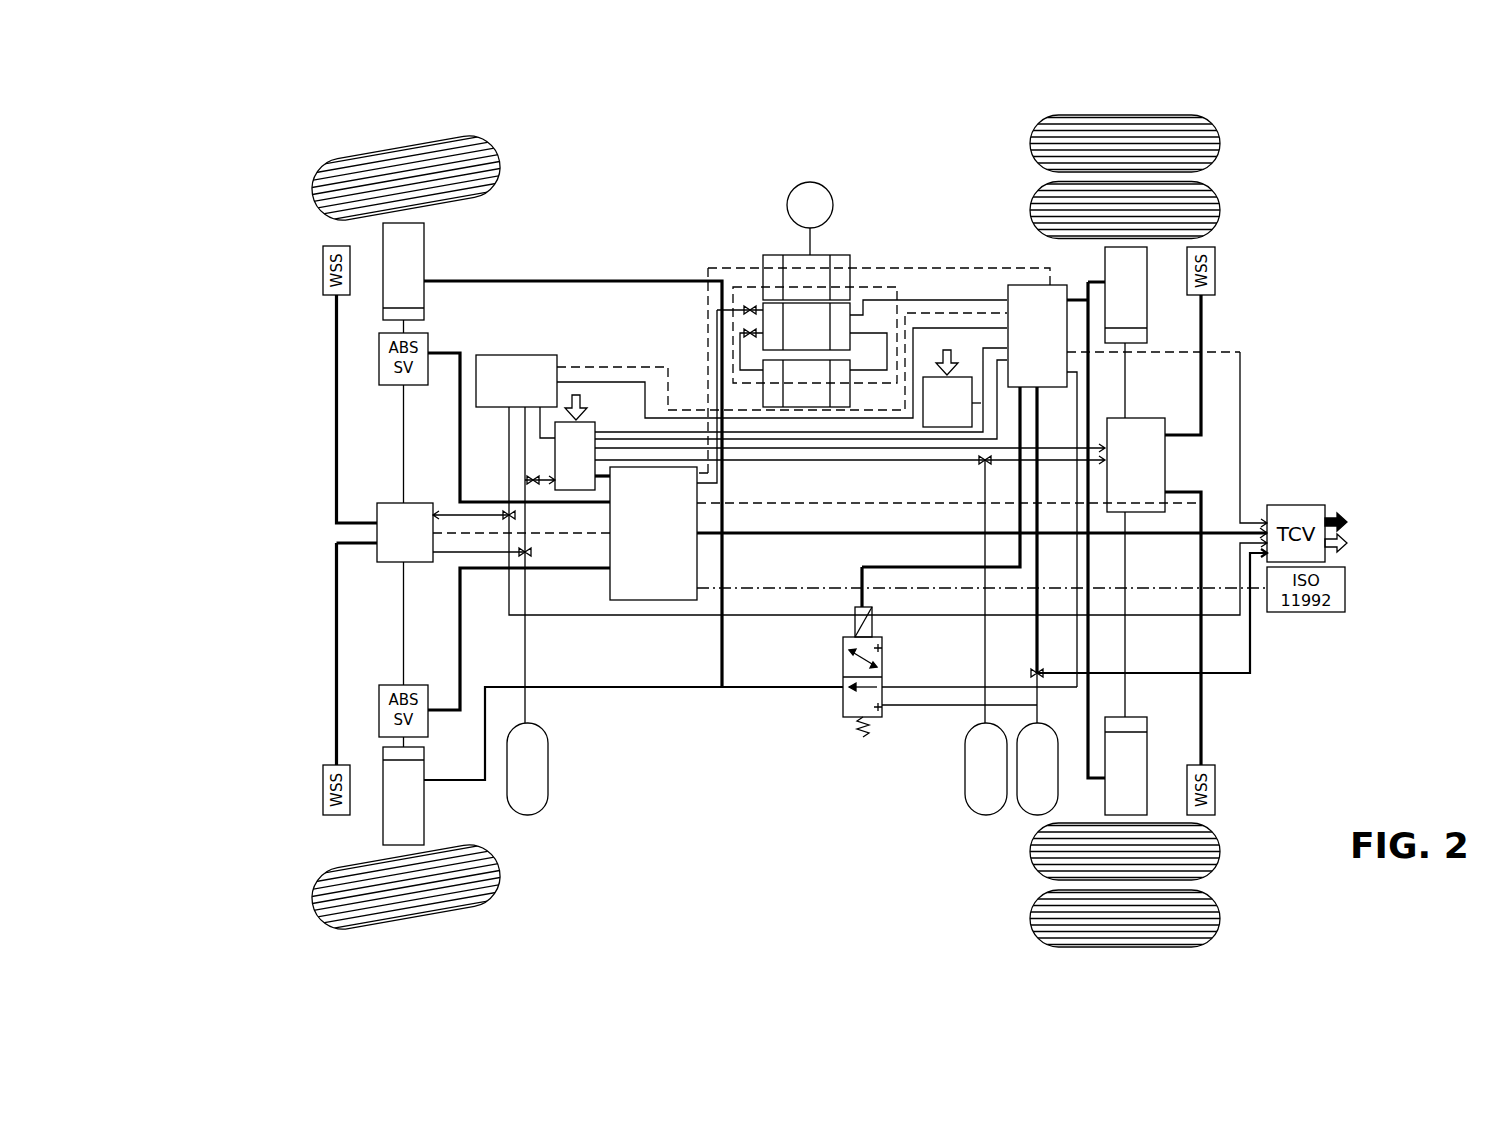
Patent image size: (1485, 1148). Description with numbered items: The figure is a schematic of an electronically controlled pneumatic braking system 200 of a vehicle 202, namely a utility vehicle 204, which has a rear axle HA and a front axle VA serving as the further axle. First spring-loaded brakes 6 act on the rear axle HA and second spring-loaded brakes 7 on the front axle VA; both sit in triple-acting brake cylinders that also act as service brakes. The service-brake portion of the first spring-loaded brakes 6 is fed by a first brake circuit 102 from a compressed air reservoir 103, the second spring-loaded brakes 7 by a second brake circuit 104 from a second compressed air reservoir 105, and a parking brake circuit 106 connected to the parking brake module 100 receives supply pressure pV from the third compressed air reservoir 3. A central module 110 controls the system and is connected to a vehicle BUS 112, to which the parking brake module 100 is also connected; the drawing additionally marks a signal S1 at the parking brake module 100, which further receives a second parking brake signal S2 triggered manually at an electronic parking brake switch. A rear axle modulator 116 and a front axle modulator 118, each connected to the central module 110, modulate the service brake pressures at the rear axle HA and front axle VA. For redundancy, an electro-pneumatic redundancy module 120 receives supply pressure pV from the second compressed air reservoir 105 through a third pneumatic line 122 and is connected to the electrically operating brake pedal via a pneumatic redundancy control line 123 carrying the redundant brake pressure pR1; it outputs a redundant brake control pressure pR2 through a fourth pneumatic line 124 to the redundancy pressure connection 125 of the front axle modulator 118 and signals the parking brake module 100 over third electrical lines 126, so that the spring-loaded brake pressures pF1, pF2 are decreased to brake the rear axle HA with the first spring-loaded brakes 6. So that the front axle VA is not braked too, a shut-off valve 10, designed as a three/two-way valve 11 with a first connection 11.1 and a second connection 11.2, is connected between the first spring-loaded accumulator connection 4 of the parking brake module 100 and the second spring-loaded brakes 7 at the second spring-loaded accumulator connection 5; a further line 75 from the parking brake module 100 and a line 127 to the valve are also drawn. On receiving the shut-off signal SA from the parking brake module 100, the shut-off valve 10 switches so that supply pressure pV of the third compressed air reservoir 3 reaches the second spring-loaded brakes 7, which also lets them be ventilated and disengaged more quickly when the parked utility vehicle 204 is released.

The electronically controlled pneumatic braking system 200 is at (171, 122).
The vehicle 202 is at (171, 122).
The utility vehicle 204 is at (222, 180).
The front axle VA is at (476, 124).
The rear axle HA is at (1238, 130).
The second spring-loaded brakes 7 is at (424, 243).
The first spring-loaded brakes 6 is at (1147, 272).
The vehicle BUS 112 is at (773, 255).
The sensor signal S1 is at (897, 268).
The second parking brake signal S2 is at (983, 346).
The shut-off signal SA is at (920, 565).
The parking brake module 100 is at (1020, 285).
The first spring-loaded accumulator connection 4 is at (1067, 292).
The electro-pneumatic redundancy module 120 is at (517, 355).
The pneumatic redundancy control line 123 is at (599, 396).
The control pressure pR1 is at (553, 420).
The third electrical lines 126 is at (600, 366).
The fourth pneumatic line 124 is at (517, 423).
The third pneumatic line 122 is at (517, 442).
The redundant brake control pressure pR2 is at (507, 472).
The redundancy pressure connection 125 is at (437, 512).
The front axle modulator 118 is at (390, 563).
The central module 110 is at (697, 568).
The parking brake pressure line 75 is at (1080, 365).
The spring brake pressure pF1 is at (1079, 392).
The spring brake pressure pF2 is at (1079, 402).
The rear axle modulator 116 is at (1165, 465).
The supply line 127 is at (877, 565).
The shut-off valve 10 is at (805, 672).
The 3/2-way valve 11 is at (805, 672).
The first 3/2-way valve connection 11.1 is at (882, 657).
The second 3/2-way valve connection 11.2 is at (863, 727).
The second spring-loaded accumulator connection 5 is at (840, 695).
The first brake circuit 102 is at (985, 675).
The second brake circuit 104 is at (530, 712).
The second compressed air reservoir 105 is at (571, 759).
The parking brake circuit 106 is at (1090, 697).
The supply pressure pV is at (1042, 717).
The compressed air reservoir 103 is at (965, 790).
The compressed air reservoir 3 is at (1020, 806).